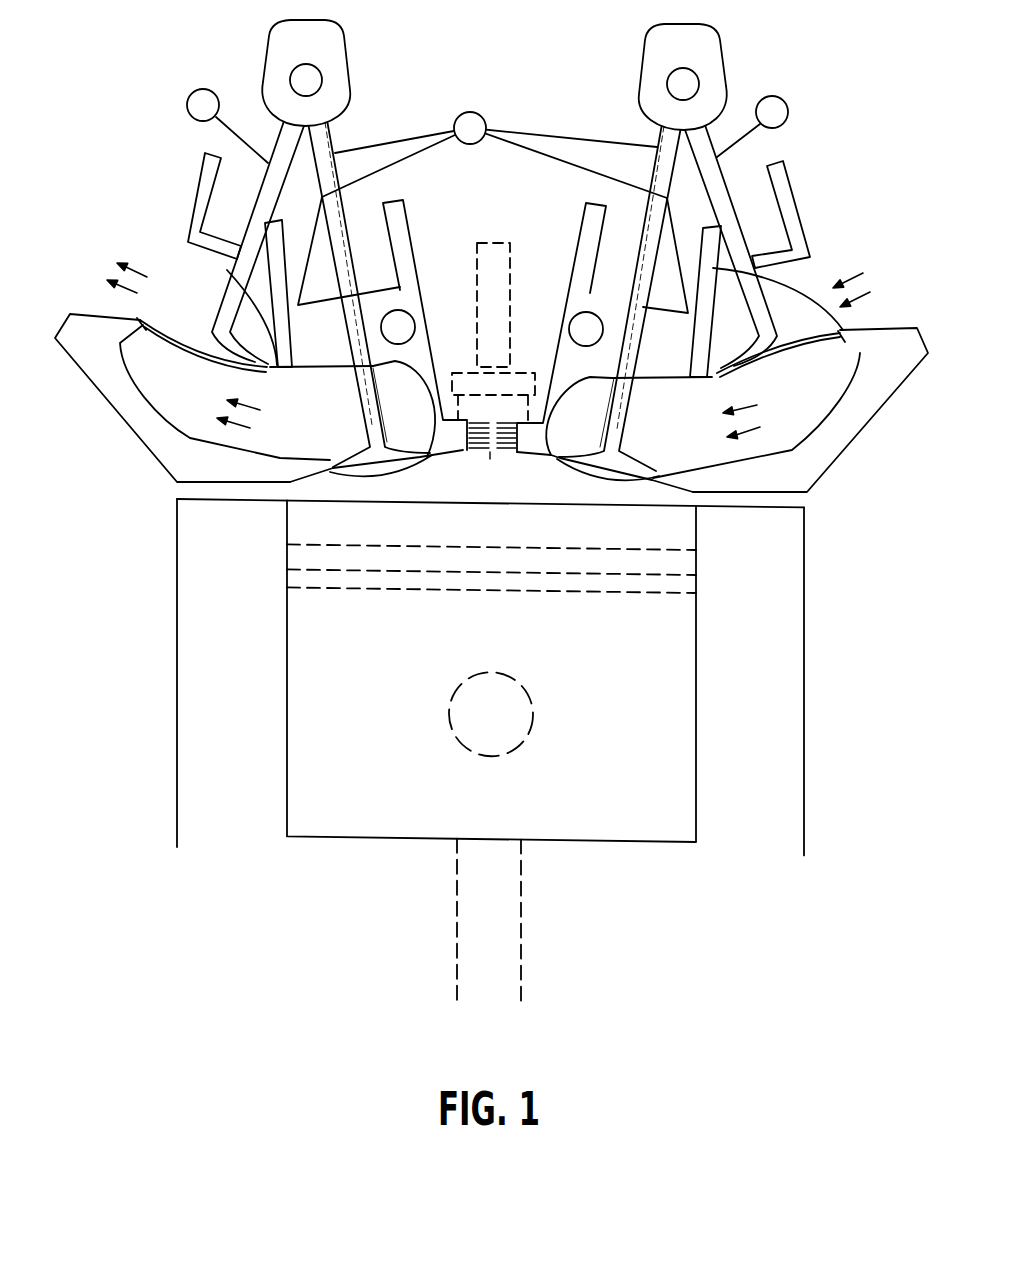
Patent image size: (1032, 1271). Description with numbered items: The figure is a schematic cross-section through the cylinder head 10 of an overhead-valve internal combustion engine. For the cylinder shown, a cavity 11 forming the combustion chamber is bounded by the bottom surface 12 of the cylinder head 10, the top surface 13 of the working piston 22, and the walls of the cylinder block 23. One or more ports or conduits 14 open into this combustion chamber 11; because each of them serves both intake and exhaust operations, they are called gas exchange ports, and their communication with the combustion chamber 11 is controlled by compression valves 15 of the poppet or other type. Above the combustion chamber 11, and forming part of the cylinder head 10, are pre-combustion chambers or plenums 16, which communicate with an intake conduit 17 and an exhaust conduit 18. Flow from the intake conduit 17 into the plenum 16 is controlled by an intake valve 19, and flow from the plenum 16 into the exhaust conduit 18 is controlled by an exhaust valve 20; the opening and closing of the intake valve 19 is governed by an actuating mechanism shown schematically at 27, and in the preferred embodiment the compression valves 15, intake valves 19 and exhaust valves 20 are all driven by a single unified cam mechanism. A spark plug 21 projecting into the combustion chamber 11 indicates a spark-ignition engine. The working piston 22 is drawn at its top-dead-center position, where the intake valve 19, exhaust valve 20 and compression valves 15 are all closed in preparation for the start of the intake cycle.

The cylinder head 10 is at (660, 355).
The cavity 11 is at (502, 483).
The bottom surface 12 is at (288, 483).
The top surface 13 is at (377, 503).
The gas exchange port 14 is at (655, 481).
The compression valve 15 is at (370, 427).
The pre-combustion chamber 16 is at (299, 419).
The intake conduit 17 is at (857, 353).
The exhaust conduit 18 is at (147, 327).
The intake valve 19 is at (842, 331).
The exhaust valve 20 is at (183, 330).
The spark plug 21 is at (488, 242).
The working piston 22 is at (594, 722).
The cylinder block 23 is at (729, 757).
The valve actuating mechanism 27 is at (370, 61).